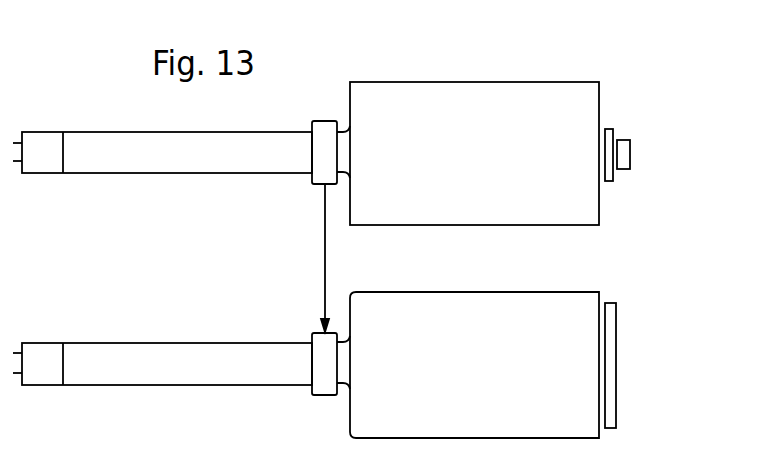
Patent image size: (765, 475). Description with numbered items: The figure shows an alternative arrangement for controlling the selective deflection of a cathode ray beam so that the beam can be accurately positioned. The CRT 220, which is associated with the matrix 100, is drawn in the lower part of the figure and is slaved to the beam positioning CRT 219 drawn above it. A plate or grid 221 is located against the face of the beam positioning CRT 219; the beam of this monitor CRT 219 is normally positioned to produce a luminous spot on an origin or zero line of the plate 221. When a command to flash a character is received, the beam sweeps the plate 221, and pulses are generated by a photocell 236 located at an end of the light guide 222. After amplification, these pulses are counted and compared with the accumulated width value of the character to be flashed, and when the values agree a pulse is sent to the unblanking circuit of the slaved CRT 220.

The beam positioning CRT 219 is at (482, 87).
The CRT 220 is at (495, 293).
The plate or grid 221 is at (609, 130).
The light guide 222 is at (625, 166).
The matrix 100 is at (612, 428).
The photocell 236 is at (193, 474).